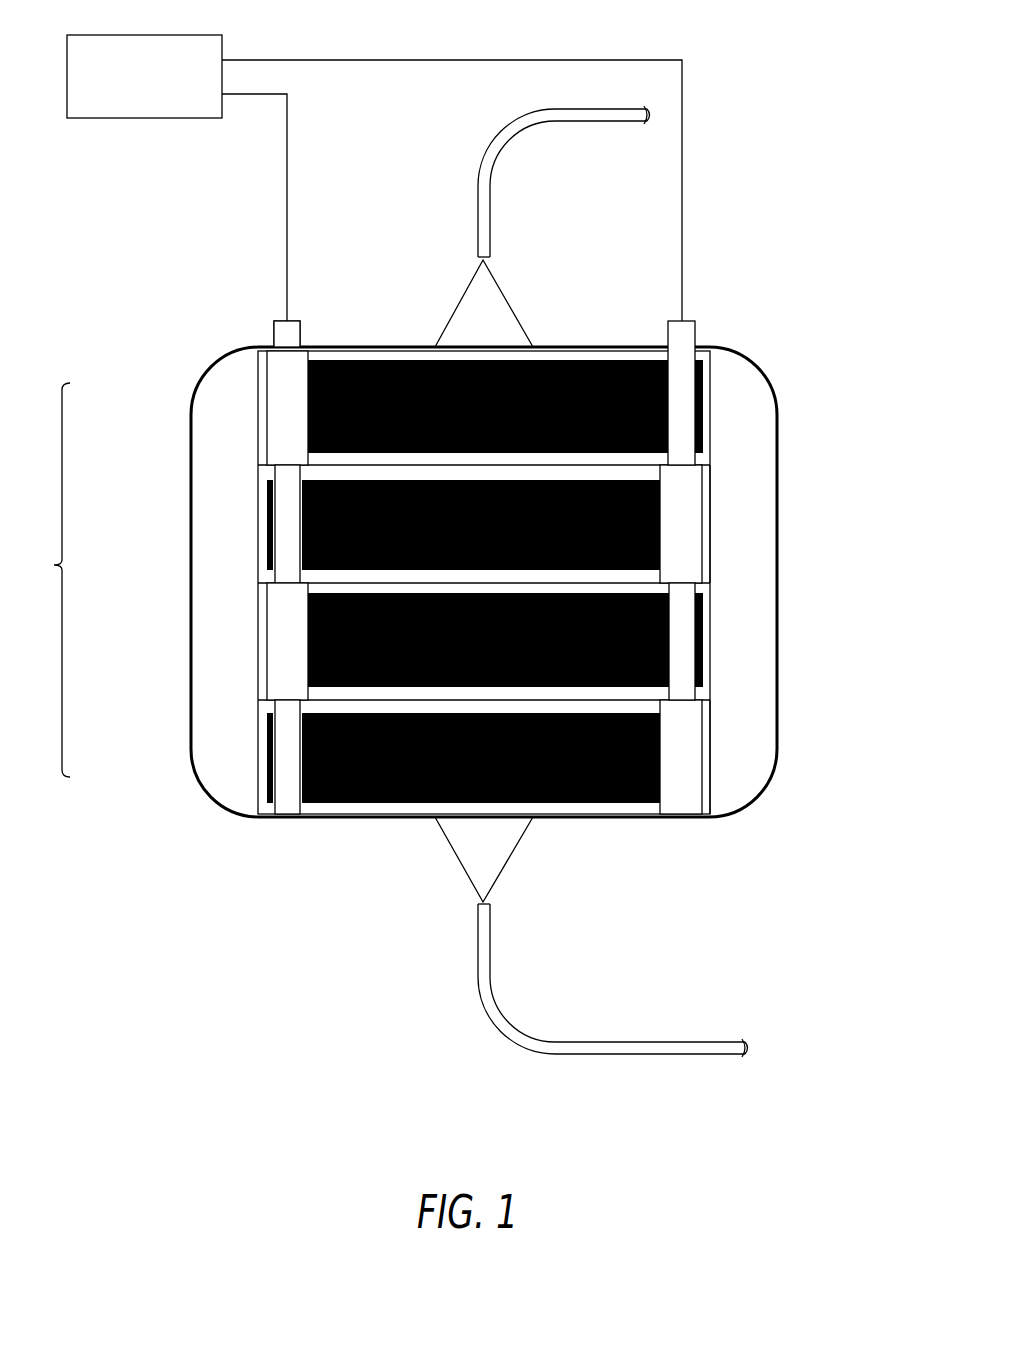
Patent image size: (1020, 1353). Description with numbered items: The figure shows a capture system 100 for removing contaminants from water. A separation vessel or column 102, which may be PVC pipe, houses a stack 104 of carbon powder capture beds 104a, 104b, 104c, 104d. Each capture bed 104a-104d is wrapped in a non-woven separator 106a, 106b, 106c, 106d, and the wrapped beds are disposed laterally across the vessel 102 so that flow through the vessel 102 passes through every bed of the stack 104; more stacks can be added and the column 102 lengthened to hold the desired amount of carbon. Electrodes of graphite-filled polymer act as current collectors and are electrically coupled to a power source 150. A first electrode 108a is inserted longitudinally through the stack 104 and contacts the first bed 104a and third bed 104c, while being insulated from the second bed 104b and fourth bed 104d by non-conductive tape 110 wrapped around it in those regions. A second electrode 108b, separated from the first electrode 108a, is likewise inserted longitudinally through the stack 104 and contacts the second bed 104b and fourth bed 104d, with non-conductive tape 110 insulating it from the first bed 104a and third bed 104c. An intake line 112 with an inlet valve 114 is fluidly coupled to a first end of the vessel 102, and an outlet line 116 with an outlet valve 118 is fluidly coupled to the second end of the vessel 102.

The electrochemical cell system 100 is at (830, 87).
The separation vessel 102 is at (768, 431).
The stack 104 is at (41, 580).
The first capture bed 104a is at (330, 387).
The second capture bed 104b is at (267, 524).
The third capture bed 104c is at (330, 617).
The fourth capture bed 104d is at (265, 750).
The non-woven separator 106a is at (710, 392).
The non-woven separator 106b is at (710, 483).
The non-woven separator 106c is at (710, 592).
The non-woven separator 106d is at (710, 695).
The first electrode 108a is at (685, 644).
The second electrode 108b is at (287, 808).
The non-conductive tape 110 is at (272, 425).
The intake line 112 is at (478, 958).
The inlet valve 114 is at (505, 901).
The outlet line 116 is at (478, 206).
The outlet valve 118 is at (503, 261).
The power source 150 is at (162, 90).